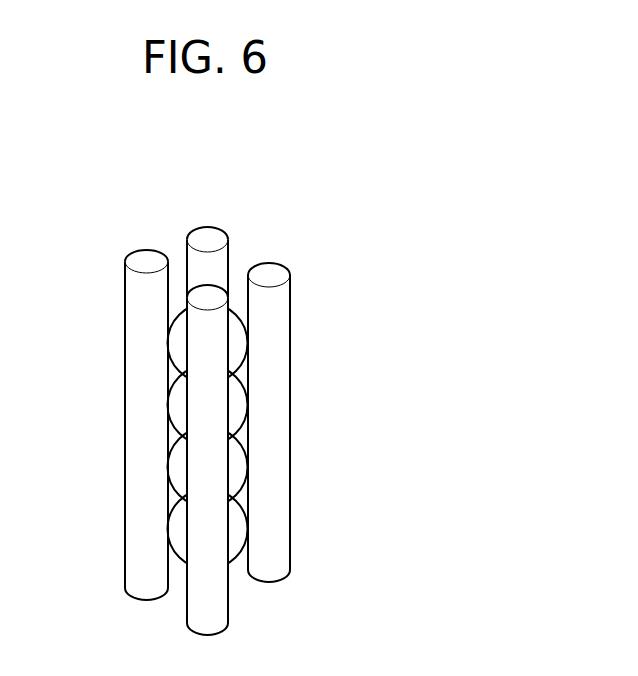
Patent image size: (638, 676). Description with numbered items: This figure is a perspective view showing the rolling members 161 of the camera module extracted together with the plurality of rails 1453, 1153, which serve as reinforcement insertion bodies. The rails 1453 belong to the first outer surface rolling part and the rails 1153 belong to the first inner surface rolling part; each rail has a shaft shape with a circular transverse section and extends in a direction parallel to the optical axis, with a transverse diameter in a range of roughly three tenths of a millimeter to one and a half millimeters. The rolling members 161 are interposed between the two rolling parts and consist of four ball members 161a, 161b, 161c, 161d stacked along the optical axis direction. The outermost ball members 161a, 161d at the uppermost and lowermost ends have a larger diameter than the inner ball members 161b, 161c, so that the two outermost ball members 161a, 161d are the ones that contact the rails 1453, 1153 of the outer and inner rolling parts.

The rails of the first inner surface rolling part 1153 is at (202, 482).
The rails of the first outer surface rolling part 1453 is at (210, 237).
The rolling members 161 is at (299, 436).
The ball member 161a is at (238, 341).
The ball member 161b is at (238, 406).
The ball member 161c is at (238, 467).
The ball member 161d is at (272, 529).